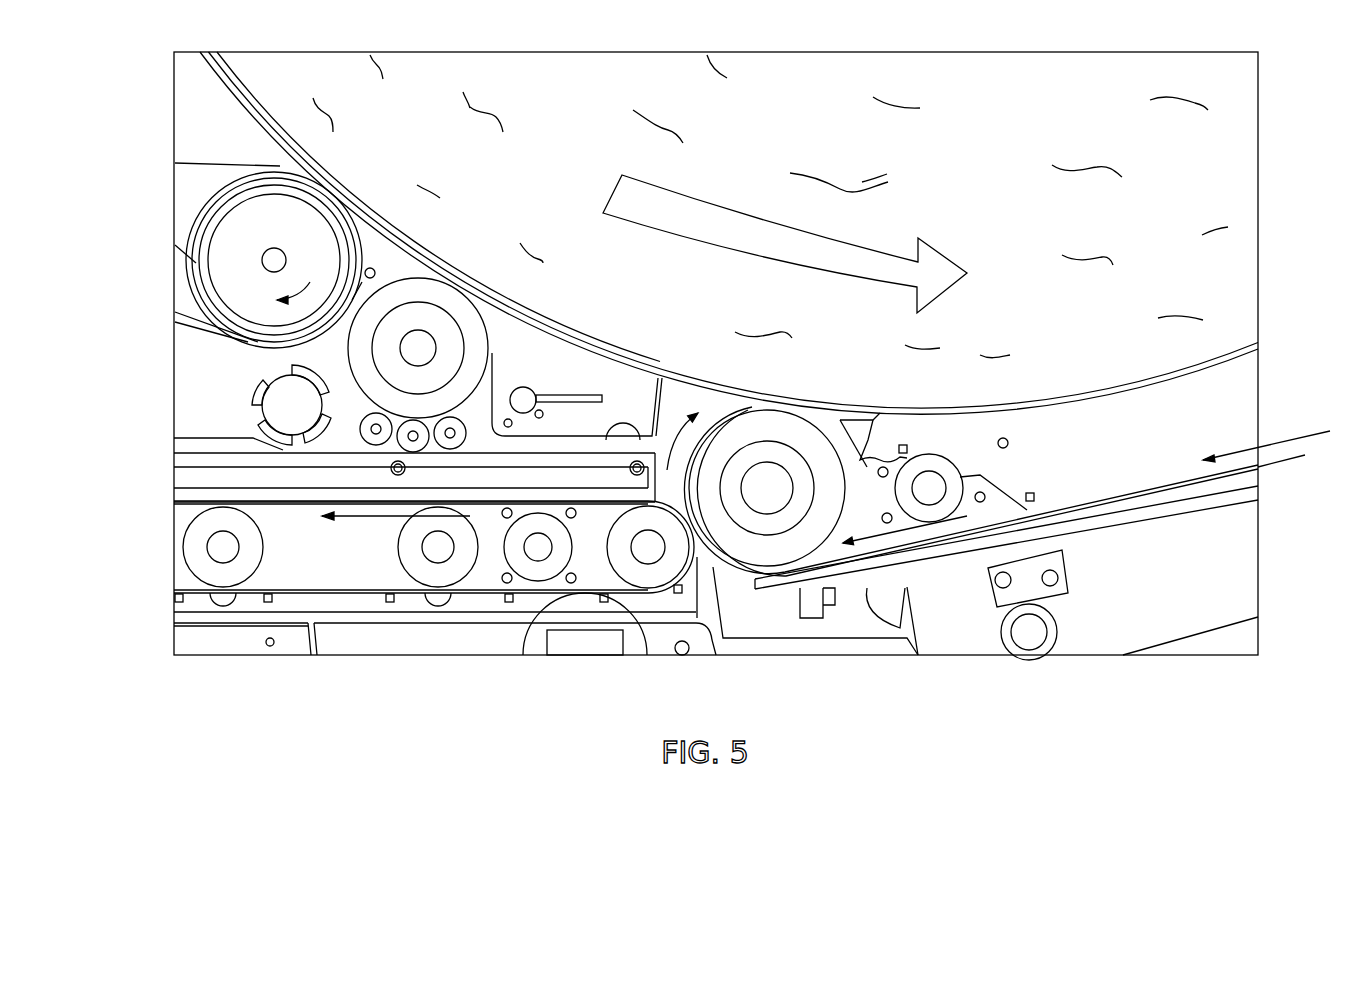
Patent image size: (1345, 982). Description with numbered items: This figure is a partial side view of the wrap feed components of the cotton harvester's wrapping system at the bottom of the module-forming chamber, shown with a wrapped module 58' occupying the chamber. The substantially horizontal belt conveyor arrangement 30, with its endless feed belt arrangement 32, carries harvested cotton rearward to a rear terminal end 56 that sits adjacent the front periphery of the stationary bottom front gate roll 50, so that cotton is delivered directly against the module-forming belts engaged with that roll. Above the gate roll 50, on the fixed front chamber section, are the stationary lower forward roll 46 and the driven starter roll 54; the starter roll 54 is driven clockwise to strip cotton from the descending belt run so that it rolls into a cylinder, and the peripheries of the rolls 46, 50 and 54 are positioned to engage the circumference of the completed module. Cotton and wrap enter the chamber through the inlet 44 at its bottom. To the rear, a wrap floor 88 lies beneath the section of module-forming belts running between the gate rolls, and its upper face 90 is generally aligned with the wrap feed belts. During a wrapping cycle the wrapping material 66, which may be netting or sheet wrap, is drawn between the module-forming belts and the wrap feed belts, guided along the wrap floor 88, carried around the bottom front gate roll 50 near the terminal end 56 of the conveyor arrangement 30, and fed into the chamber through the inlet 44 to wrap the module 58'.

The belt conveyor arrangement 30 is at (162, 546).
The endless feed belt arrangement 32 is at (197, 500).
The inlet 44 is at (622, 390).
The lower forward roll 46 is at (315, 180).
The bottom front gate roll 50 is at (812, 425).
The starter roll 54 is at (458, 285).
The rear terminal end 56 is at (690, 580).
The wrapped module 58' is at (729, 233).
The wrapping material 66 is at (1072, 400).
The wrap floor 88 is at (810, 585).
The upper face 90 is at (1168, 482).